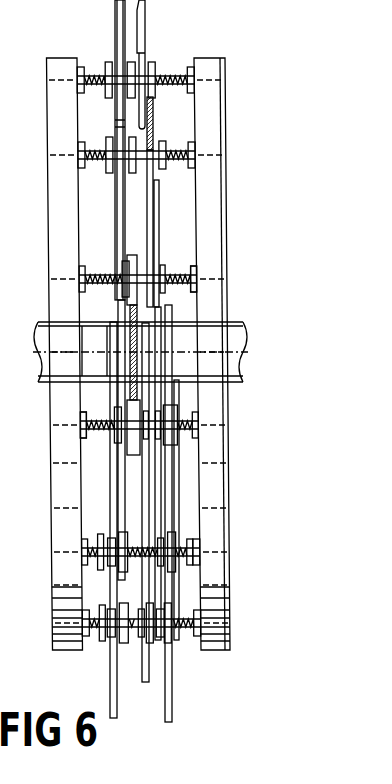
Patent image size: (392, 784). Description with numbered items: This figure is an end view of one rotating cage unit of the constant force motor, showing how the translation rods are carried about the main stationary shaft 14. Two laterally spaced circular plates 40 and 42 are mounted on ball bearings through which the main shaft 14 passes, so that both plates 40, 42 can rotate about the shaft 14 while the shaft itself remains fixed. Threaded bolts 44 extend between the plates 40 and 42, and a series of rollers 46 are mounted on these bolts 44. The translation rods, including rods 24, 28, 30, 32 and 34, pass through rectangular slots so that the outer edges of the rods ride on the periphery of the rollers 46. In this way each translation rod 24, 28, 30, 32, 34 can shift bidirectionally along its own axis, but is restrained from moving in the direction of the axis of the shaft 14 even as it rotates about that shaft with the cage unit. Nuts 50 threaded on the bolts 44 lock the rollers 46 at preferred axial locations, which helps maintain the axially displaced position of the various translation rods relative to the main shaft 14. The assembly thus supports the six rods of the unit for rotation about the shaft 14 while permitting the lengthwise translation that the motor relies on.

The main stationary shaft 14 is at (42, 326).
The translation rod 24 is at (127, 318).
The translation rod 28 is at (108, 392).
The translation rod 30 is at (147, 527).
The translation rod 32 is at (120, 212).
The translation rod 34 is at (155, 118).
The circular plate 40 is at (80, 652).
The circular plate 42 is at (226, 652).
The threaded bolt 44 is at (167, 318).
The roller 46 is at (130, 252).
The nut 50 is at (190, 290).